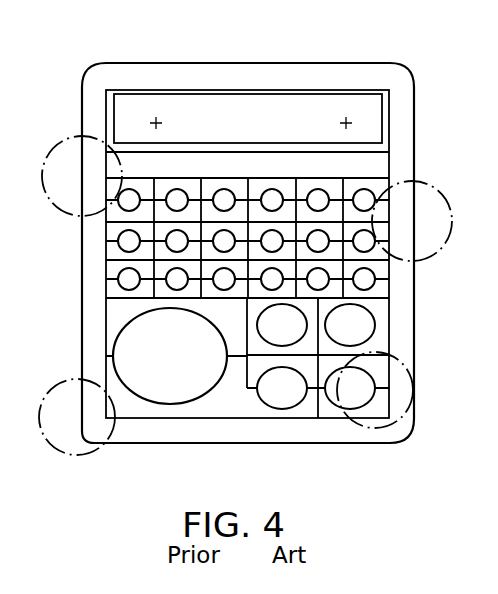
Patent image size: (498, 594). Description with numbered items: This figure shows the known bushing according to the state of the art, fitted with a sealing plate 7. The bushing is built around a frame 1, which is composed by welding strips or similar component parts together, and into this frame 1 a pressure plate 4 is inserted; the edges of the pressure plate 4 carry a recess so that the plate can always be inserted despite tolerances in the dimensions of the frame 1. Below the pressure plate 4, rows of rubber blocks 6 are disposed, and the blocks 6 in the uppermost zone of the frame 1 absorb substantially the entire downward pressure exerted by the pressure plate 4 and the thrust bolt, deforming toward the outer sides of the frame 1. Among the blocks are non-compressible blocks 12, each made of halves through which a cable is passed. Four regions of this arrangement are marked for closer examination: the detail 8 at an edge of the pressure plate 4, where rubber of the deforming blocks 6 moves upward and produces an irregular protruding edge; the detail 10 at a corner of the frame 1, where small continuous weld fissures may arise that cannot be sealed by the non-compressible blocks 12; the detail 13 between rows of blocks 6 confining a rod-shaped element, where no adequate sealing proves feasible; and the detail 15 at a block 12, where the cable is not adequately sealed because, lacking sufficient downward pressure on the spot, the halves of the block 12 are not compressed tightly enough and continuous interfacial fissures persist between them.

The frame 1 is at (313, 79).
The pressure plate 4 is at (372, 168).
The blocks 6 is at (116, 206).
The sealing plate 7 is at (218, 117).
The detail of the known bushing 8 is at (53, 145).
The detail of the known bushing 10 is at (55, 448).
The non-compressible blocks 12 is at (108, 373).
The detail of the known bushing 13 is at (452, 238).
The detail of the known bushing 15 is at (412, 388).